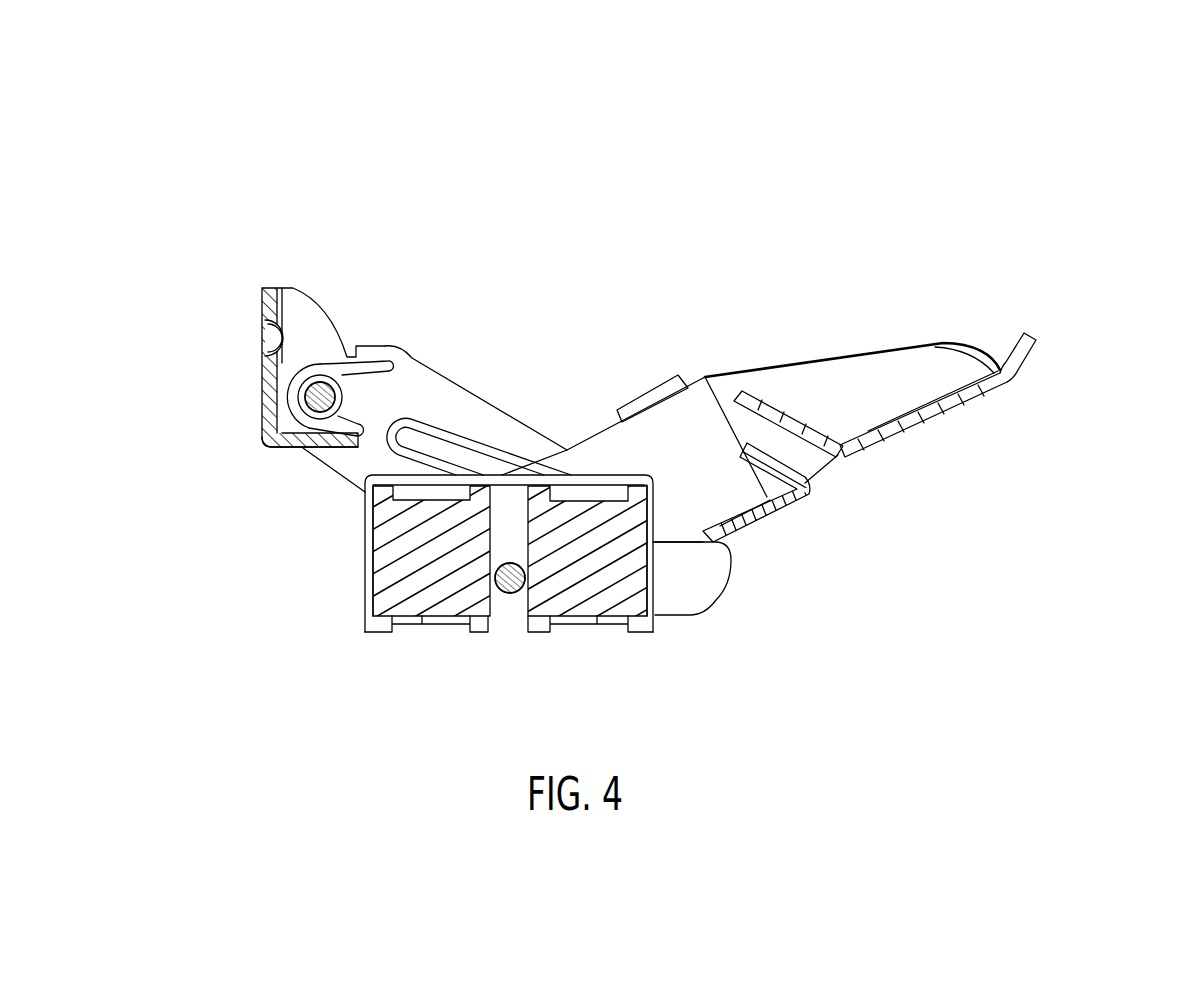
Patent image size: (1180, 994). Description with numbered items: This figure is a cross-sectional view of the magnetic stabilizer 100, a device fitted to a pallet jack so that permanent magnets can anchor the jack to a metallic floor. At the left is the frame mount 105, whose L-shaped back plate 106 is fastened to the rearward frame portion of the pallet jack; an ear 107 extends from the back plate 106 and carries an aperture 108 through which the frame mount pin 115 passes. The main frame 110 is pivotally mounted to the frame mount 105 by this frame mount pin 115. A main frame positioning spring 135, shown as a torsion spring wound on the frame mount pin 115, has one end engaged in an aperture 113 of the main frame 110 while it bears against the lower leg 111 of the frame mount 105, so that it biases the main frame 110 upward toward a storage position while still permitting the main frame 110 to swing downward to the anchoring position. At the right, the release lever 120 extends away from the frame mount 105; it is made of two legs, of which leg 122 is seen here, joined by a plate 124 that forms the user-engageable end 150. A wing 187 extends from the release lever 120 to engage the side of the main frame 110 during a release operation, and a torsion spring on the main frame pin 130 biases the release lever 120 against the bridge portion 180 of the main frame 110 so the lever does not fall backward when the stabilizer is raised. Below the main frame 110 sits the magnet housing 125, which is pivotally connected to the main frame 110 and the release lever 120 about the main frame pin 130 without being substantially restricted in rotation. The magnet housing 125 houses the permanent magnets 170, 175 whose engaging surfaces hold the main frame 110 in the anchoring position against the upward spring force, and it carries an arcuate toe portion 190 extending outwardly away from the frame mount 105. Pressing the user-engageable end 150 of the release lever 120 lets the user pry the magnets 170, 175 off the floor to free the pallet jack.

The magnetic stabilizer 100 is at (993, 250).
The frame mount 105 is at (275, 352).
The back plate 106 is at (262, 300).
The ear 107 is at (299, 341).
The aperture 108 is at (307, 414).
The main frame 110 is at (467, 412).
The lower leg 111 is at (327, 440).
The aperture 113 is at (390, 364).
The frame mount pin 115 is at (312, 397).
The release lever 120 is at (823, 385).
The leg 122 is at (600, 447).
The plate 124 is at (920, 415).
The magnet housing 125 is at (451, 519).
The main frame pin 130 is at (513, 593).
The main frame positioning spring 135 is at (383, 362).
The user-engageable end 150 is at (1030, 353).
The permanent magnet 170 is at (423, 563).
The permanent magnet 175 is at (598, 565).
The bridge portion 180 is at (767, 520).
The wing 187 is at (662, 383).
The arcuate toe portion 190 is at (693, 572).